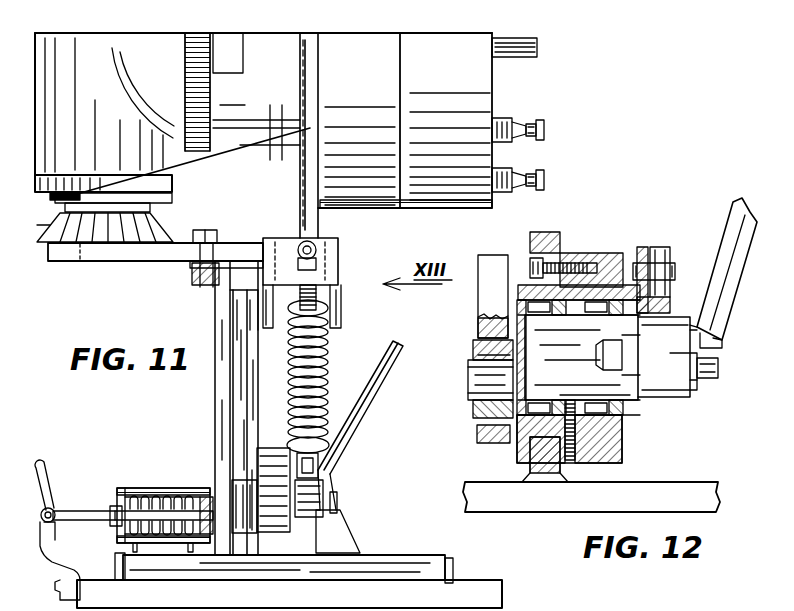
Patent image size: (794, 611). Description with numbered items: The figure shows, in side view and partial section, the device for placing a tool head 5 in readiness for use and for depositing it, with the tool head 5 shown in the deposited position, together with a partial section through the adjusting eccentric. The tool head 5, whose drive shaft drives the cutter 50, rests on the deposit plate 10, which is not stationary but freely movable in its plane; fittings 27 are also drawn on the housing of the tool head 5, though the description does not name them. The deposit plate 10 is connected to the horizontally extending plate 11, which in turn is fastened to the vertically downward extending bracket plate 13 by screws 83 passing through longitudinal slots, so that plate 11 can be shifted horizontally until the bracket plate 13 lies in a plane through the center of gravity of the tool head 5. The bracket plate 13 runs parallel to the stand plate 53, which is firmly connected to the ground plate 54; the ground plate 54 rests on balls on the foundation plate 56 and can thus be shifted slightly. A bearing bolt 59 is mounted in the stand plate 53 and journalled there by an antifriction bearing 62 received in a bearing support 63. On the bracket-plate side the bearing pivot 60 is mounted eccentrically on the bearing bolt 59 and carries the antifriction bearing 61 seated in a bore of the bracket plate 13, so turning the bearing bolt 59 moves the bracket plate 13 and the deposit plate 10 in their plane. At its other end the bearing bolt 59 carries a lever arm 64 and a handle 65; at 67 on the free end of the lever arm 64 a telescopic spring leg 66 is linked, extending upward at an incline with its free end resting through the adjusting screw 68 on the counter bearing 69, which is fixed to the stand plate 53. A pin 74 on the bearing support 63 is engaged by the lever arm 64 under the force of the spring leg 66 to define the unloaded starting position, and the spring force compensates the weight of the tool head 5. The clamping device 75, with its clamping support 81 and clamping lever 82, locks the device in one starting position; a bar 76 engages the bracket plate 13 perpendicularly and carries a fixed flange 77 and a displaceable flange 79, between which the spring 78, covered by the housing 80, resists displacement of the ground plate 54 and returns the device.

In FIG. 11, the tool head 5 is at (147, 59).
In FIG. 11, the deposit plate 10 is at (308, 133).
In FIG. 11, the fittings 27 is at (545, 131).
In FIG. 11, the screws 83 is at (206, 229).
In FIG. 11, the horizontally extending plate 11 is at (112, 250).
In FIG. 11, the cutter 50 is at (47, 224).
In FIG. 11, the bracket plate 13 is at (225, 307).
In FIG. 11, the stand plate 53 is at (247, 393).
In FIG. 11, the adjusting screw 68 is at (318, 246).
In FIG. 11, the counter bearing 69 is at (330, 264).
In FIG. 11, the pin 74 is at (316, 300).
In FIG. 11, the telescopic spring leg 66 is at (372, 352).
In FIG. 11, the link point of spring leg 67 is at (318, 474).
In FIG. 12, the link point of spring leg 67 is at (652, 248).
In FIG. 11, the ground plate 54 is at (385, 560).
In FIG. 11, the foundation plate 56 is at (476, 592).
In FIG. 11, the clamping device 75 is at (80, 470).
In FIG. 11, the flange 77 is at (126, 492).
In FIG. 11, the spring 78 is at (149, 498).
In FIG. 11, the housing 80 is at (176, 492).
In FIG. 11, the flange 79 is at (201, 500).
In FIG. 11, the bar 76 is at (90, 521).
In FIG. 11, the clamping lever 82 is at (38, 465).
In FIG. 11, the clamping support 81 is at (43, 548).
In FIG. 12, the bearing bolt 59 is at (537, 338).
In FIG. 12, the bearing pivot 60 is at (483, 377).
In FIG. 12, the antifriction bearing 61 is at (477, 358).
In FIG. 12, the antifriction bearing 62 is at (597, 420).
In FIG. 12, the bearing support 63 is at (565, 262).
In FIG. 12, the lever arm 64 is at (642, 248).
In FIG. 12, the handle 65 is at (712, 253).